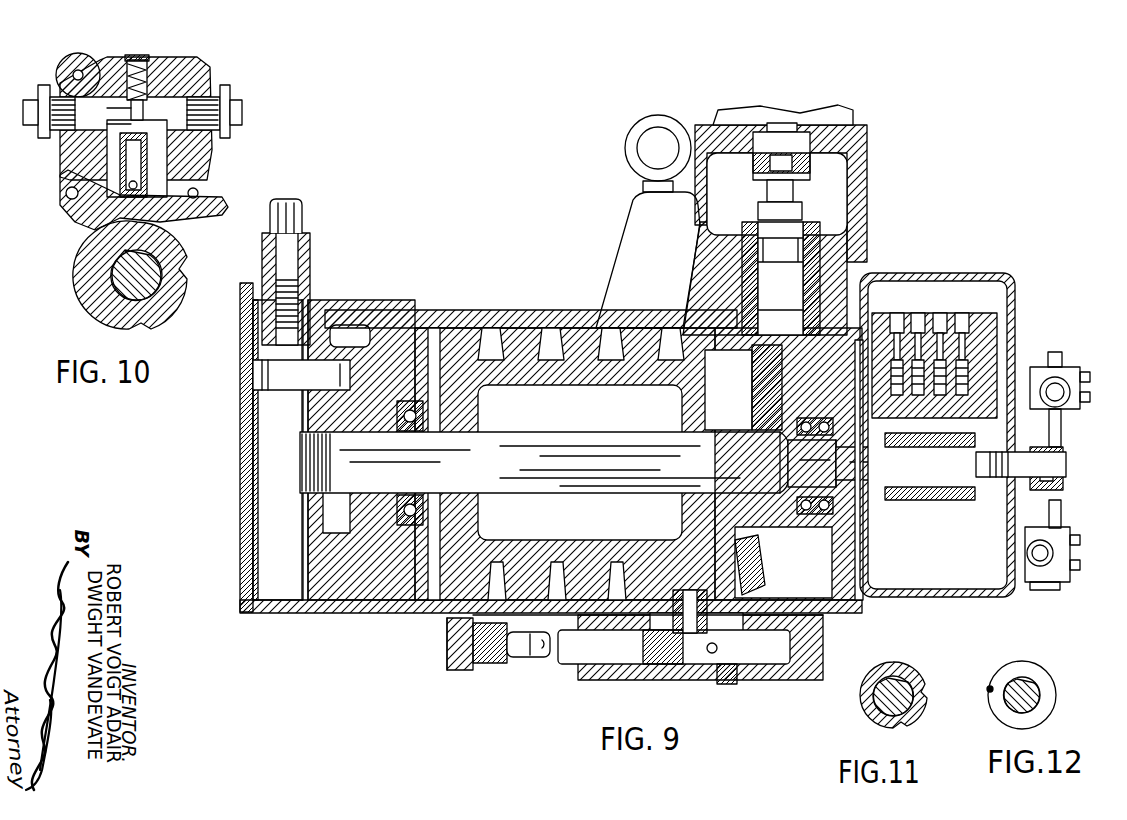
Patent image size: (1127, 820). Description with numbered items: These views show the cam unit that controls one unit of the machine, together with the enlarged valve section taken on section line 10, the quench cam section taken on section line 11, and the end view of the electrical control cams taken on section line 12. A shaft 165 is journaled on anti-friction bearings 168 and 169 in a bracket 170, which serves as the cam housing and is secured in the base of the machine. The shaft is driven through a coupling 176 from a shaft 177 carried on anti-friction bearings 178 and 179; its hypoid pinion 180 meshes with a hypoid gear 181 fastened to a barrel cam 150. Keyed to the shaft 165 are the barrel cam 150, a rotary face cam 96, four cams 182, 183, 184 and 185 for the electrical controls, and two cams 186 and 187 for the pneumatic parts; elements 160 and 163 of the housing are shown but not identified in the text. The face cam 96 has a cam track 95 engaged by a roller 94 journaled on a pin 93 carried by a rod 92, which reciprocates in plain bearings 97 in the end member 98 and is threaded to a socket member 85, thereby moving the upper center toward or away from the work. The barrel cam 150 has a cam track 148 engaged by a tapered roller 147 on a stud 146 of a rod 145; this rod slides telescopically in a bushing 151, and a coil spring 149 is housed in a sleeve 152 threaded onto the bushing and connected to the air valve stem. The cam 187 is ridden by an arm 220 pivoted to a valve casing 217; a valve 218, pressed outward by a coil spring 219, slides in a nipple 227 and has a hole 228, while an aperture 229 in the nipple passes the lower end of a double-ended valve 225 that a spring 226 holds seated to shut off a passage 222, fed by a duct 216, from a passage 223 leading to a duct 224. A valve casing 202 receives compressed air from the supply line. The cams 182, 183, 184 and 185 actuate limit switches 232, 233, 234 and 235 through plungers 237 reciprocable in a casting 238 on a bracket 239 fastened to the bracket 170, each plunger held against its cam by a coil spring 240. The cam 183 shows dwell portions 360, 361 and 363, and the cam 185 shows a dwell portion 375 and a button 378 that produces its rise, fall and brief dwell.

In FIG. 9, the section line 10 is at (1060, 438).
In FIG. 9, the section line 11 is at (912, 418).
In FIG. 9, the section line 12 is at (955, 542).
In FIG. 9, the socket member 85 is at (300, 214).
In FIG. 9, the rod 92 is at (300, 269).
In FIG. 9, the pin 93 is at (268, 375).
In FIG. 9, the roller 94 is at (330, 348).
In FIG. 9, the cam track 95 is at (330, 512).
In FIG. 9, the rotary face cam 96 is at (372, 350).
In FIG. 9, the plain bearings 97 is at (252, 313).
In FIG. 9, the end member 98 is at (240, 545).
In FIG. 9, the rod 145 is at (571, 650).
In FIG. 9, the stud 146 is at (690, 637).
In FIG. 9, the tapered roller 147 is at (715, 612).
In FIG. 9, the cam track 148 is at (678, 348).
In FIG. 9, the coil spring 149 is at (447, 643).
In FIG. 9, the barrel cam 150 is at (622, 350).
In FIG. 9, the bushing 151 is at (510, 655).
In FIG. 9, the sleeve 152 is at (460, 668).
In FIG. 9, the groove 160 is at (577, 344).
In FIG. 9, the groove 163 is at (525, 350).
In FIG. 9, the shaft 165 is at (596, 447).
In FIG. 10, the shaft 165 is at (115, 285).
In FIG. 9, the anti-friction bearing 168 is at (402, 400).
In FIG. 9, the anti-friction bearing 169 is at (804, 516).
In FIG. 9, the bracket 170 is at (470, 330).
In FIG. 9, the coupling 176 is at (797, 136).
In FIG. 9, the shaft 177 is at (790, 295).
In FIG. 9, the anti-friction bearing 178 is at (743, 244).
In FIG. 9, the anti-friction bearing 179 is at (737, 320).
In FIG. 9, the hypoid pinion 180 is at (753, 382).
In FIG. 9, the hypoid gear 181 is at (754, 568).
In FIG. 9, the cam 182 is at (906, 498).
In FIG. 9, the cam 183 is at (915, 498).
In FIG. 11, the cam 183 is at (905, 686).
In FIG. 9, the cam 184 is at (938, 500).
In FIG. 9, the cam 185 is at (958, 498).
In FIG. 12, the cam 185 is at (1036, 682).
In FIG. 9, the cam 186 is at (1040, 452).
In FIG. 9, the cam 187 is at (1050, 463).
In FIG. 10, the cam 187 is at (176, 290).
In FIG. 9, the valve casing 202 is at (1050, 582).
In FIG. 10, the duct 216 is at (232, 110).
In FIG. 9, the valve casing 217 is at (1060, 368).
In FIG. 10, the valve casing 217 is at (100, 70).
In FIG. 10, the valve 218 is at (105, 191).
In FIG. 10, the coil spring 219 is at (208, 150).
In FIG. 10, the arm 220 is at (210, 200).
In FIG. 10, the passage 222 is at (170, 85).
In FIG. 10, the passage 223 is at (64, 152).
In FIG. 10, the duct 224 is at (36, 104).
In FIG. 10, the double-ended valve 225 is at (151, 111).
In FIG. 10, the spring 226 is at (140, 58).
In FIG. 10, the nipple 227 is at (157, 170).
In FIG. 10, the hole 228 is at (137, 158).
In FIG. 10, the aperture 229 is at (116, 112).
In FIG. 9, the limit switch 232 is at (897, 313).
In FIG. 9, the limit switch 233 is at (922, 313).
In FIG. 9, the limit switch 234 is at (944, 313).
In FIG. 9, the limit switch 235 is at (968, 318).
In FIG. 9, the plunger 237 is at (956, 365).
In FIG. 9, the casting 238 is at (1000, 379).
In FIG. 9, the bracket 239 is at (860, 569).
In FIG. 9, the coil spring 240 is at (962, 371).
In FIG. 11, the dwell portion 360 is at (863, 707).
In FIG. 11, the dwell portion 361 is at (926, 694).
In FIG. 11, the dwell portion 363 is at (920, 726).
In FIG. 12, the dwell portion 375 is at (1022, 662).
In FIG. 12, the button 378 is at (991, 687).